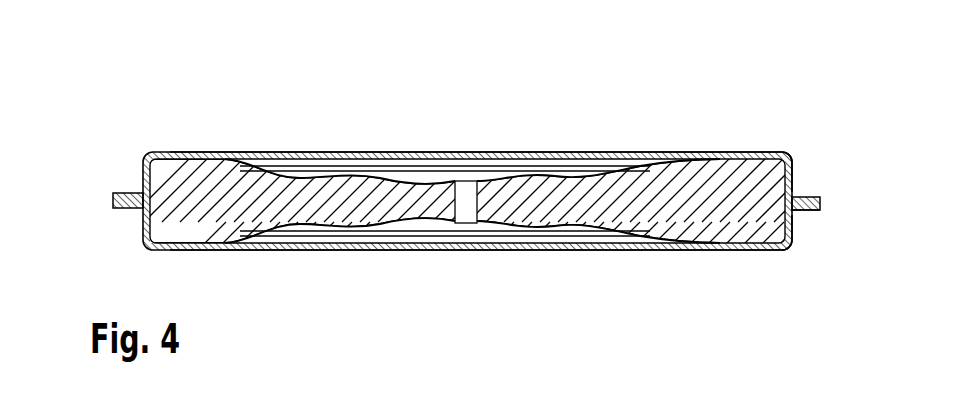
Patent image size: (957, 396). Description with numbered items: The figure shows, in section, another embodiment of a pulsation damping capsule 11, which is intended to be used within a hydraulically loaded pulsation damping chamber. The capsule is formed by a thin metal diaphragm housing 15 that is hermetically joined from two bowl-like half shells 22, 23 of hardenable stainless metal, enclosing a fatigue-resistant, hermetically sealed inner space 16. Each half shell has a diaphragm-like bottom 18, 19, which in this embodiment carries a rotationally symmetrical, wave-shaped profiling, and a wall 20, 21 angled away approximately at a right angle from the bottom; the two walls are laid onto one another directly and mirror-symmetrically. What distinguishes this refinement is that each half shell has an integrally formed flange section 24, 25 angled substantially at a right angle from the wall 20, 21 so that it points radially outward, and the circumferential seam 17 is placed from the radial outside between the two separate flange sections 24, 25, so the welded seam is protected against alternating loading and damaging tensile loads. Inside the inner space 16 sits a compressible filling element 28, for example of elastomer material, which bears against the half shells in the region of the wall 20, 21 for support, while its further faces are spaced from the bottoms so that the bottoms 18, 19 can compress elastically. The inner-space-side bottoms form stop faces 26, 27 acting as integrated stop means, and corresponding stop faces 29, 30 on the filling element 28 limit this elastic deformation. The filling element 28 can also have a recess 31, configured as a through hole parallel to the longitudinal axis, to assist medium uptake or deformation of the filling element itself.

The pulsation damping capsule 11 is at (690, 88).
The metal diaphragm housing 15 is at (163, 130).
The inner space 16 is at (426, 181).
The circumferential seam 17 is at (822, 203).
The bottom 18 is at (473, 154).
The bottom 19 is at (474, 252).
The wall 20 is at (803, 170).
The wall 21 is at (800, 232).
The half shell 22 is at (298, 146).
The half shell 23 is at (298, 256).
The flange section 24 is at (812, 185).
The flange section 25 is at (812, 214).
The stop face 26 is at (552, 158).
The stop face 27 is at (552, 250).
The filling element 28 is at (753, 220).
The stop face 29 is at (410, 182).
The stop face 30 is at (410, 222).
The recess 31 is at (465, 214).